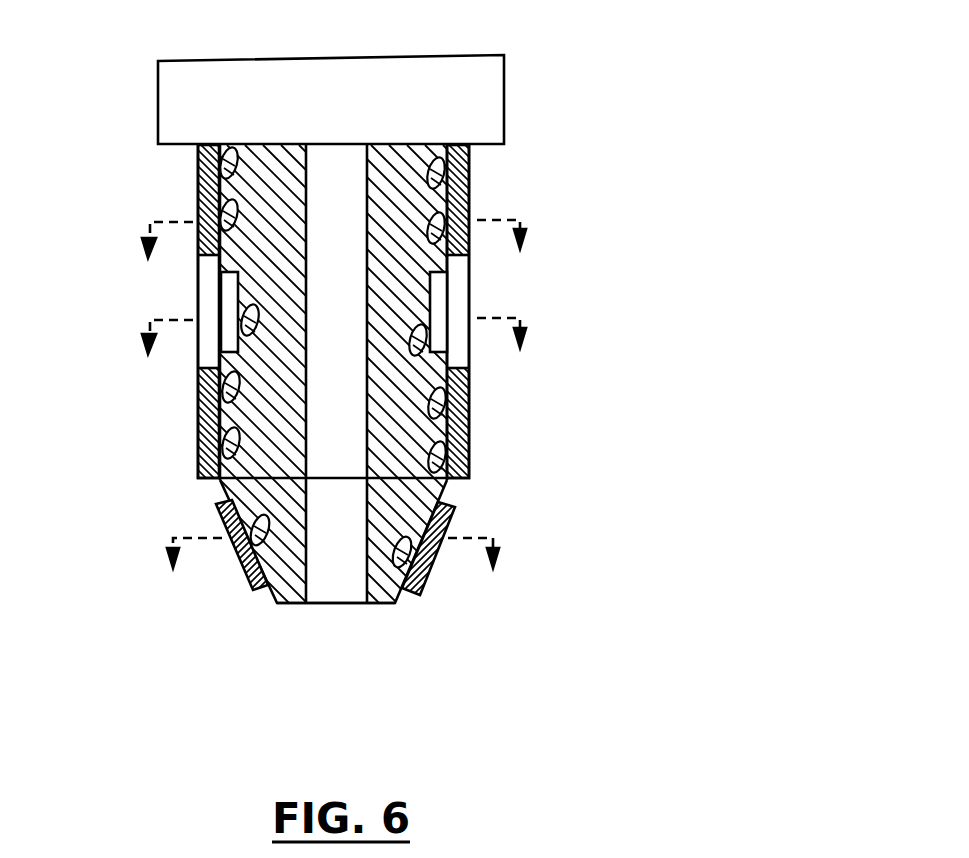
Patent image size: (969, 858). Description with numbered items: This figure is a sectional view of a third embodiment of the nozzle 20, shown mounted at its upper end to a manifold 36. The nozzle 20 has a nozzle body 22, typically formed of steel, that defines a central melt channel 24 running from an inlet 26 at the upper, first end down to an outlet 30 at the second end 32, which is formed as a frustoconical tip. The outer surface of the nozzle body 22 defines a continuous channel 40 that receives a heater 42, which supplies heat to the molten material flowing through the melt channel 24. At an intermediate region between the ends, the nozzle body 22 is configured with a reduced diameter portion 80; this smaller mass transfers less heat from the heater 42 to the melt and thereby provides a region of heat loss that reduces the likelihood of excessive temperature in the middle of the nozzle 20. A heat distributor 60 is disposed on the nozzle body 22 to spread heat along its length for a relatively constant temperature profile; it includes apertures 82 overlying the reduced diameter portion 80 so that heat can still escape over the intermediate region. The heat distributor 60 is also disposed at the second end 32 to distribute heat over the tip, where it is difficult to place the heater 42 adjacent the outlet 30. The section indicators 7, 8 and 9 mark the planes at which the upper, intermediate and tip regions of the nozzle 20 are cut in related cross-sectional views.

The nozzle 20 is at (720, 193).
The nozzle body 22 is at (290, 203).
The melt channel 24 is at (335, 165).
The inlet 26 is at (331, 142).
The outlet 30 is at (337, 605).
The second end 32 is at (283, 607).
The manifold 36 is at (506, 60).
The continuous channel 40 is at (470, 163).
The heater 42 is at (470, 180).
The heat distributor 60 is at (470, 202).
The reduced diameter portion 80 is at (228, 297).
The apertures 82 is at (460, 303).
The section line 7 is at (333, 257).
The section line 8 is at (333, 354).
The section line 9 is at (333, 573).